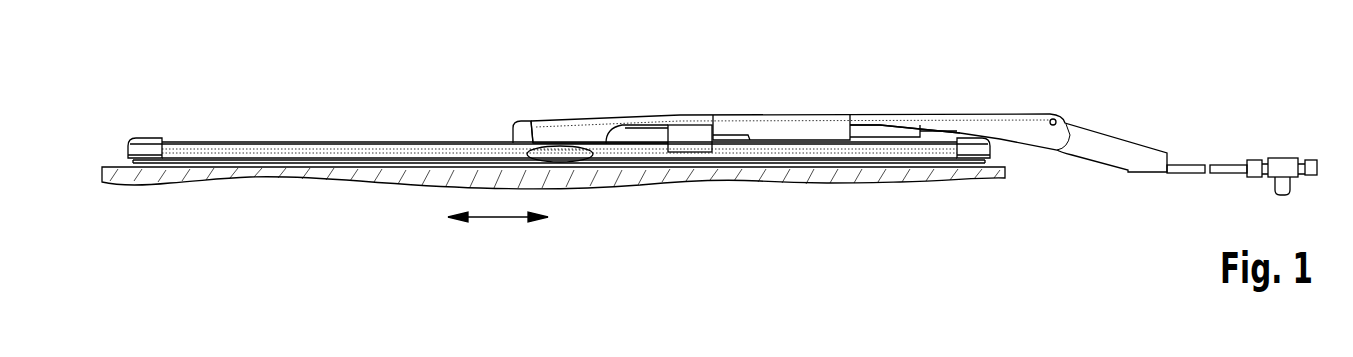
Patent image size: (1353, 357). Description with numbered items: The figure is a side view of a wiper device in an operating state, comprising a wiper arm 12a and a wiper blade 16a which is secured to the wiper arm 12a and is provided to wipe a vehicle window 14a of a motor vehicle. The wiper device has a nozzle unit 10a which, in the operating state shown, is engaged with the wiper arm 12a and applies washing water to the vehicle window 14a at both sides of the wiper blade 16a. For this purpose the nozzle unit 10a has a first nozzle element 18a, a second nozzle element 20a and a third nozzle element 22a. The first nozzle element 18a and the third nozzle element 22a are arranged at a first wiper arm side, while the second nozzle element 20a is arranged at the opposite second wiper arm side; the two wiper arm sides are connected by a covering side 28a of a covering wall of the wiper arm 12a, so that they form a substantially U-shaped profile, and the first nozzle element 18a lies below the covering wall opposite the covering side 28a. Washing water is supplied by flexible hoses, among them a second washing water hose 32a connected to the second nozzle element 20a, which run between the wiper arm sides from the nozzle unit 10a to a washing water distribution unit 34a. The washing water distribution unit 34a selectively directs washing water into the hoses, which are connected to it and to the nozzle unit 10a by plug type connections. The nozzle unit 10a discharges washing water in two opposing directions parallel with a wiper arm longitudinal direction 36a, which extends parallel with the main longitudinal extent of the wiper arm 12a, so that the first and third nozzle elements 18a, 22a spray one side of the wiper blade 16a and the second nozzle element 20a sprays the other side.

The nozzle unit 10a is at (489, 97).
The wiper arm 12a is at (1000, 125).
The vehicle window 14a is at (197, 173).
The wiper blade 16a is at (322, 152).
The first nozzle element 18a is at (520, 125).
The second nozzle element 20a is at (688, 135).
The third nozzle element 22a is at (930, 135).
The covering side 28a is at (876, 114).
The second washing water hose 32a is at (1192, 168).
The washing water distribution unit 34a is at (1285, 153).
The wiper arm longitudinal direction 36a is at (500, 222).